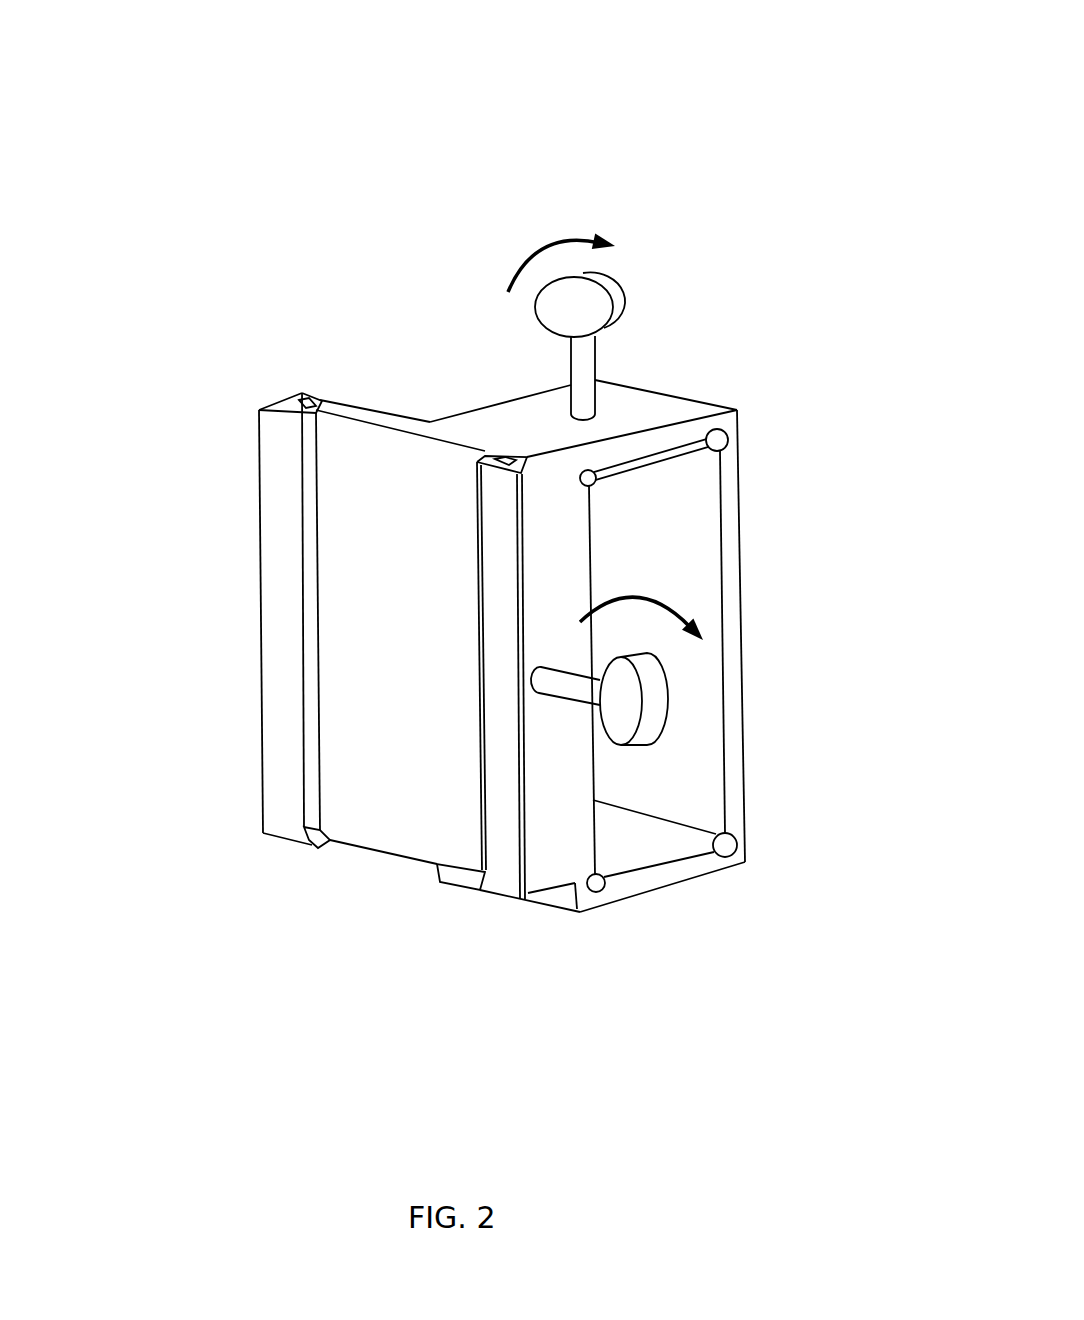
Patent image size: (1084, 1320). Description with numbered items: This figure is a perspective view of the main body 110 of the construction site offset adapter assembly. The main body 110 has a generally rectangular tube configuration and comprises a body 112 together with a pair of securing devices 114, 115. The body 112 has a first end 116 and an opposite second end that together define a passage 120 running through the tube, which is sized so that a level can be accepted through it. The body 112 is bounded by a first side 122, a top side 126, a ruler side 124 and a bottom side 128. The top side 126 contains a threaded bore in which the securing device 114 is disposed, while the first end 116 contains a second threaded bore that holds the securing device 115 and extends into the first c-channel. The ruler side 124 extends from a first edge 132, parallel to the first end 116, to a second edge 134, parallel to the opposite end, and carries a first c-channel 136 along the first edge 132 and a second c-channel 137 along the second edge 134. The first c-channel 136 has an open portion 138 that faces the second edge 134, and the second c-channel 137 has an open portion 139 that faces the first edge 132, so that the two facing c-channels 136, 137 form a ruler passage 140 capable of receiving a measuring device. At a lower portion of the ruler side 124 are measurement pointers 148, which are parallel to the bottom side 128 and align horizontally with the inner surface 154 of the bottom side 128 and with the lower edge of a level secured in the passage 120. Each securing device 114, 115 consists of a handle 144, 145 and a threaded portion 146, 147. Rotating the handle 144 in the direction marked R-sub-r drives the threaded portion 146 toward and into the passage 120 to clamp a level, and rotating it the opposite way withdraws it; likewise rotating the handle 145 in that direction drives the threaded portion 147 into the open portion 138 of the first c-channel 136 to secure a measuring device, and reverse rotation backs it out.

The main body 110 is at (715, 130).
The body 112 is at (407, 219).
The securing device 114 is at (665, 260).
The securing device 115 is at (705, 697).
The first end 116 is at (730, 513).
The passage 120 is at (705, 578).
The first side 122 is at (742, 462).
The ruler side 124 is at (350, 520).
The top side 126 is at (643, 410).
The bottom side 128 is at (650, 892).
The first edge 132 is at (520, 726).
The second edge 134 is at (260, 622).
The first c-channel 136 is at (500, 792).
The second c-channel 137 is at (287, 812).
The open portion 138 is at (509, 440).
The open portion 139 is at (324, 393).
The ruler passage 140 is at (398, 537).
The handle 144 is at (578, 310).
The handle 145 is at (625, 720).
The threaded portion 146 is at (585, 358).
The threaded portion 147 is at (573, 687).
The measurement pointers 148 is at (374, 941).
The inner surface 154 is at (630, 847).